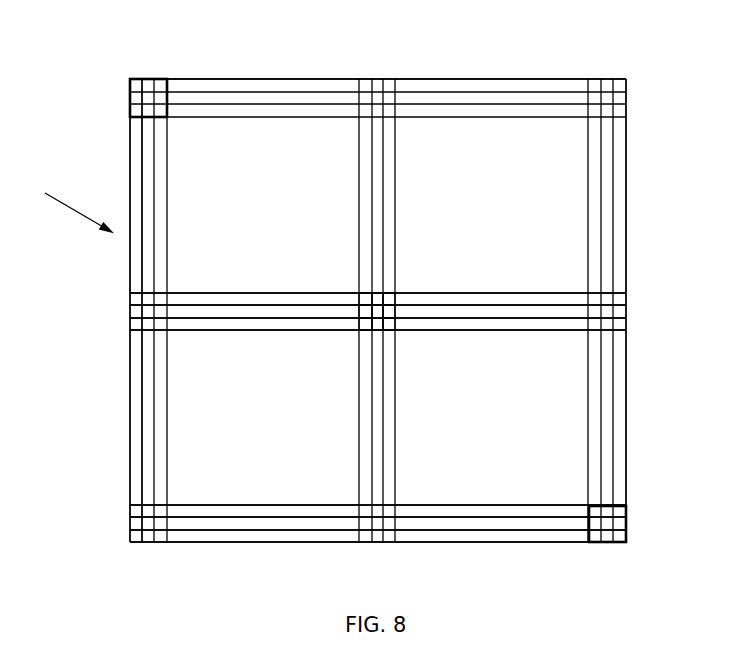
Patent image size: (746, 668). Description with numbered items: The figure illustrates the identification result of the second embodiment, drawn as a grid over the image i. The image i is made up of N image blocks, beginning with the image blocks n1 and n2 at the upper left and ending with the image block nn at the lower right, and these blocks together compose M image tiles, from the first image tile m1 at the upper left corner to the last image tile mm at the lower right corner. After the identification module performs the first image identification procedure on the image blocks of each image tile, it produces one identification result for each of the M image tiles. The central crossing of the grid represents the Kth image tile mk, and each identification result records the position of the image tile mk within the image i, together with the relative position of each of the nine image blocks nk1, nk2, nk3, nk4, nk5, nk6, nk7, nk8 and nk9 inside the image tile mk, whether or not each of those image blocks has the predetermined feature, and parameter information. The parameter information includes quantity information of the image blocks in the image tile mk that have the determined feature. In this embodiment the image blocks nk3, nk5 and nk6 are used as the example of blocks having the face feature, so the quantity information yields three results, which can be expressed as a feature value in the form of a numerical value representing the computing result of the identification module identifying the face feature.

The image block n1 is at (137, 84).
The image block n2 is at (151, 84).
The image tile m1 is at (162, 80).
The image i is at (72, 206).
The Kth image tile mk is at (360, 300).
The image block nk1 is at (366, 298).
The image block nk2 is at (380, 297).
The image block nk3 is at (390, 298).
The image block nk4 is at (368, 312).
The image block nk5 is at (380, 312).
The image block nk6 is at (392, 314).
The image block nk7 is at (366, 324).
The image block nk8 is at (379, 324).
The image block nk9 is at (392, 322).
The image tile mm is at (627, 510).
The image block nn is at (619, 541).